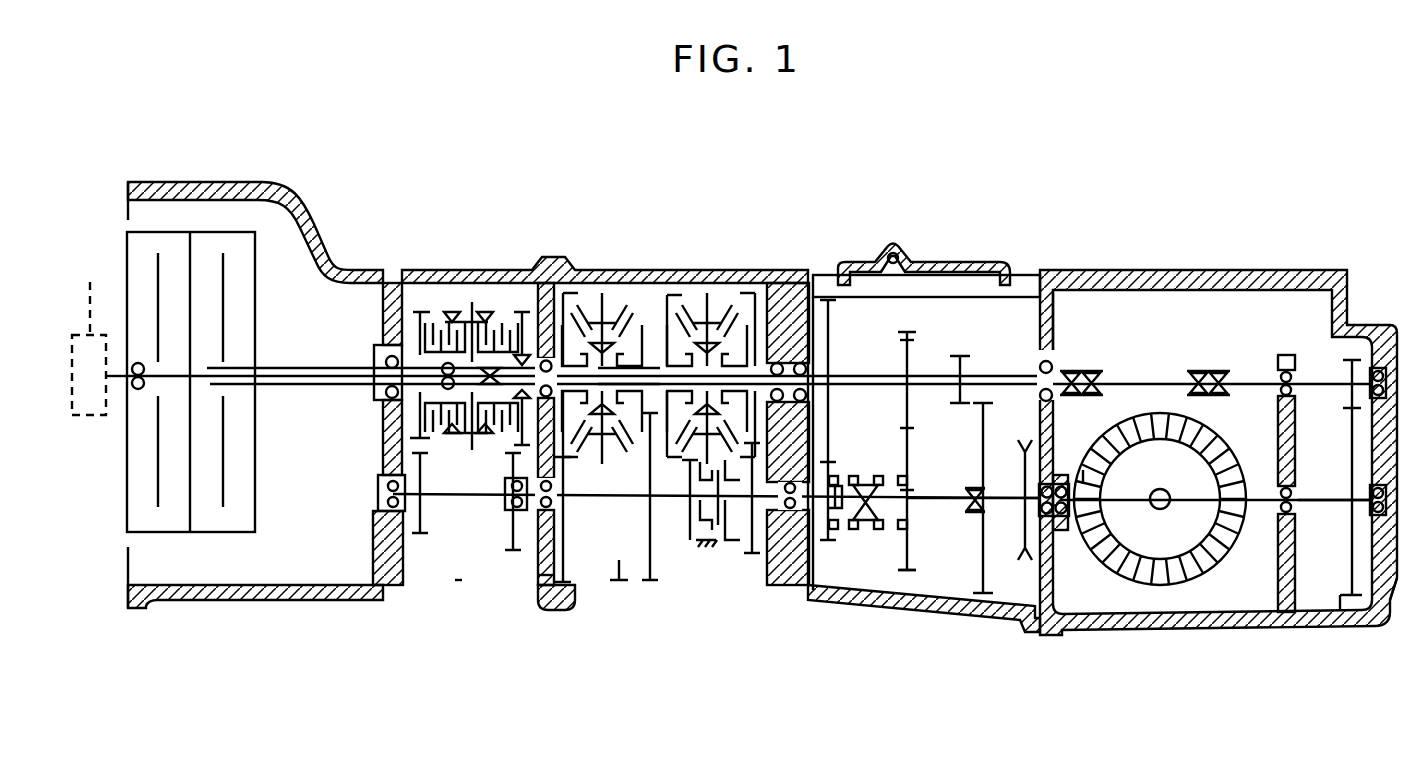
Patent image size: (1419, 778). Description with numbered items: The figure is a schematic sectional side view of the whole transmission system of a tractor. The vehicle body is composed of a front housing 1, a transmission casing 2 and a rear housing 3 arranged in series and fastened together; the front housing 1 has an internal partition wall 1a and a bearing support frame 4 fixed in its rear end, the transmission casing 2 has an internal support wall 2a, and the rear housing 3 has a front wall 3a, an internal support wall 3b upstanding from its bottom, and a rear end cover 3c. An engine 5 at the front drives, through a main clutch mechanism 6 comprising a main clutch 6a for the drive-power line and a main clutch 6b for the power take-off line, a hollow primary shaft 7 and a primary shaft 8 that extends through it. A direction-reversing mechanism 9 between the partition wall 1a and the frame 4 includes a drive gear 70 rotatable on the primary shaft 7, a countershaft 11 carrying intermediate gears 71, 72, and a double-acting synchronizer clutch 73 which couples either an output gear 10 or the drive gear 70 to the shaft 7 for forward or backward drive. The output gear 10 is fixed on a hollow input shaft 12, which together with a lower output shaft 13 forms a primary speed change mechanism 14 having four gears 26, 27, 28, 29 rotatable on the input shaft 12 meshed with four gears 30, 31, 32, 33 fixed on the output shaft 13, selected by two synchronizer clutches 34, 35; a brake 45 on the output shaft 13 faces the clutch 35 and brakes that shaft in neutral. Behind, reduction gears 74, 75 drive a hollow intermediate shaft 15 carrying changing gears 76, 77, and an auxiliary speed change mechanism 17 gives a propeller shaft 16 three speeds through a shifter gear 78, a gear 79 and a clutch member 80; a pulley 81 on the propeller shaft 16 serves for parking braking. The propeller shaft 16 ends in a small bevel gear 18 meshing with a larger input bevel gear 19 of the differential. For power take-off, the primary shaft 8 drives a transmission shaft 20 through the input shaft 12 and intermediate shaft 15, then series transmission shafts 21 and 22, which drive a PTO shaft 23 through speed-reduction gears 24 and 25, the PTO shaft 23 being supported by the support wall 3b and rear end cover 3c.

The front housing 1 is at (368, 602).
The internal partition wall 1a is at (382, 447).
The transmission casing 2 is at (855, 605).
The internal support wall 2a is at (795, 578).
The rear housing 3 is at (1218, 622).
The front wall 3a is at (1056, 343).
The internal support wall 3b is at (1285, 353).
The rear end cover 3c is at (1396, 600).
The bearing support frame 4 is at (540, 578).
The engine 5 is at (100, 328).
The main clutch mechanism 6 is at (210, 224).
The main clutch of the vehicle drive-power transmission line 6a is at (238, 515).
The main clutch of the power take-off transmission line 6b is at (166, 515).
The hollow primary shaft 7 is at (314, 366).
The primary shaft 8 is at (303, 386).
The direction-reversing mechanism 9 is at (458, 574).
The output gear 10 is at (506, 300).
The countershaft 11 is at (467, 495).
The input shaft 12 is at (655, 340).
The output shaft 13 is at (586, 496).
The primary speed change mechanism 14 is at (621, 582).
The intermediate shaft 15 is at (928, 374).
The propeller shaft 16 is at (943, 494).
The auxiliary speed change mechanism 17 is at (926, 586).
The small bevel gear 18 is at (1095, 474).
The input bevel gear 19 is at (1158, 586).
The transmission shaft 20 is at (801, 350).
The transmission shaft 21 is at (1151, 381).
The transmission shaft 22 is at (1323, 386).
The PTO shaft 23 is at (1324, 503).
The speed-reduction meshing gear 24 is at (1354, 358).
The speed-reduction meshing gear 25 is at (1332, 626).
The gear 26 is at (585, 300).
The gear 27 is at (638, 300).
The gear 28 is at (690, 300).
The gear 29 is at (750, 300).
The gear 30 is at (567, 612).
The gear 31 is at (652, 582).
The gear 32 is at (677, 542).
The gear 33 is at (752, 556).
The synchronizer clutch 34 is at (616, 455).
The synchronizer clutch 35 is at (718, 300).
The brake 45 is at (733, 526).
The drive gear 70 is at (418, 306).
The intermediate gear 71 is at (423, 536).
The intermediate gear 72 is at (513, 556).
The synchronizer clutch 73 is at (452, 303).
The gear 74 is at (826, 527).
The gear 75 is at (816, 360).
The changing gear 76 is at (965, 350).
The changing gear 77 is at (908, 330).
The shifter gear 78 is at (982, 596).
The gear 79 is at (902, 576).
The clutch member 80 is at (868, 478).
The pulley 81 is at (1026, 597).